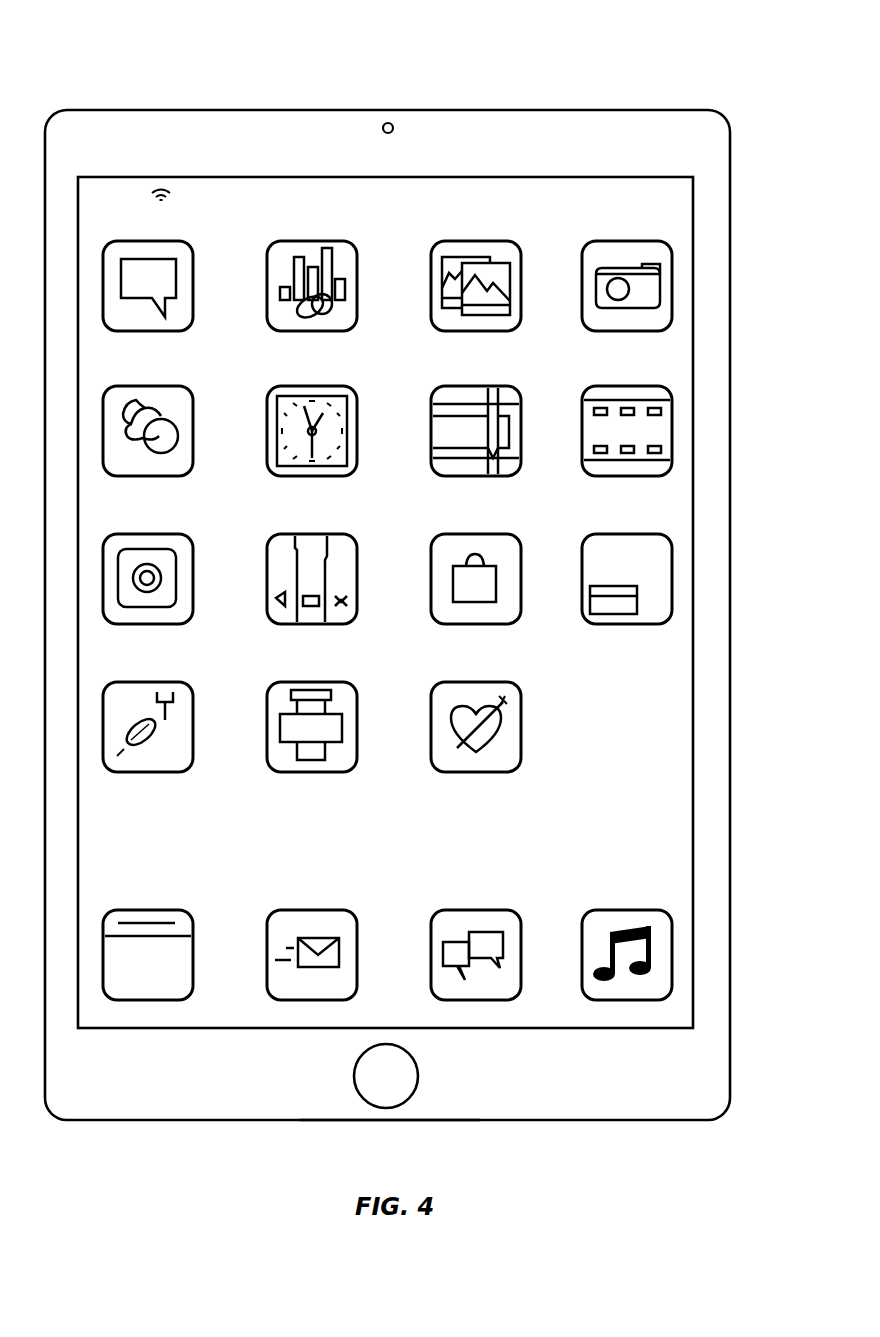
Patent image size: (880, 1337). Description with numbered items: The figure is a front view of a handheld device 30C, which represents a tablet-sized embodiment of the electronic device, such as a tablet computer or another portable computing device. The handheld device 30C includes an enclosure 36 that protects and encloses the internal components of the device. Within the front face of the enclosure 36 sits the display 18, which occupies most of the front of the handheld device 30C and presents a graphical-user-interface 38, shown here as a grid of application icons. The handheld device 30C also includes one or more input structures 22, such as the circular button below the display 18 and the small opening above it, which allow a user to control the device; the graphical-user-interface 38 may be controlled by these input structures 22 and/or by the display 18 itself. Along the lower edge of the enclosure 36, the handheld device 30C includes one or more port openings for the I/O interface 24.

The handheld device 30C is at (60, 62).
The enclosure 36 is at (732, 203).
The input structures 22 is at (650, 108).
The I/O interface 24 is at (386, 1122).
The display 18 is at (696, 684).
The graphical-user-interface 38 is at (395, 251).